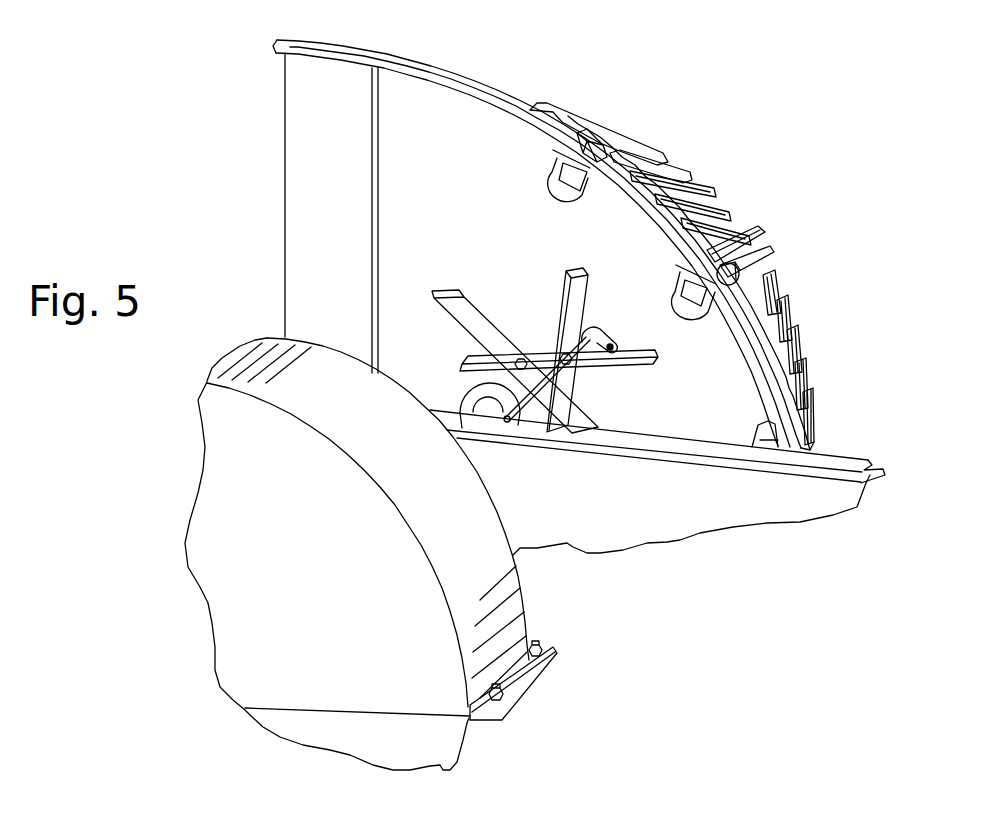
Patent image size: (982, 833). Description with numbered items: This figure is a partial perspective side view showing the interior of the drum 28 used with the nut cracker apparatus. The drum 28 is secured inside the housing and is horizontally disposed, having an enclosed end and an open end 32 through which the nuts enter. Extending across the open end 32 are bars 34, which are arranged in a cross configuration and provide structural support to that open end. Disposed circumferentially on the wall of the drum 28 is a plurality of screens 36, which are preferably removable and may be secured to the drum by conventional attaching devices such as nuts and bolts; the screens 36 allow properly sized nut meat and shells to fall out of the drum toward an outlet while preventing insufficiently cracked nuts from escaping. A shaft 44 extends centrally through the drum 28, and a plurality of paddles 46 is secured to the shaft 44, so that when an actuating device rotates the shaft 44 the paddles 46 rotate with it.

The drum 28 is at (785, 447).
The open end 32 is at (605, 332).
The bars 34 is at (325, 155).
The screens 36 is at (768, 262).
The shaft 44 is at (468, 390).
The paddles 46 is at (573, 283).